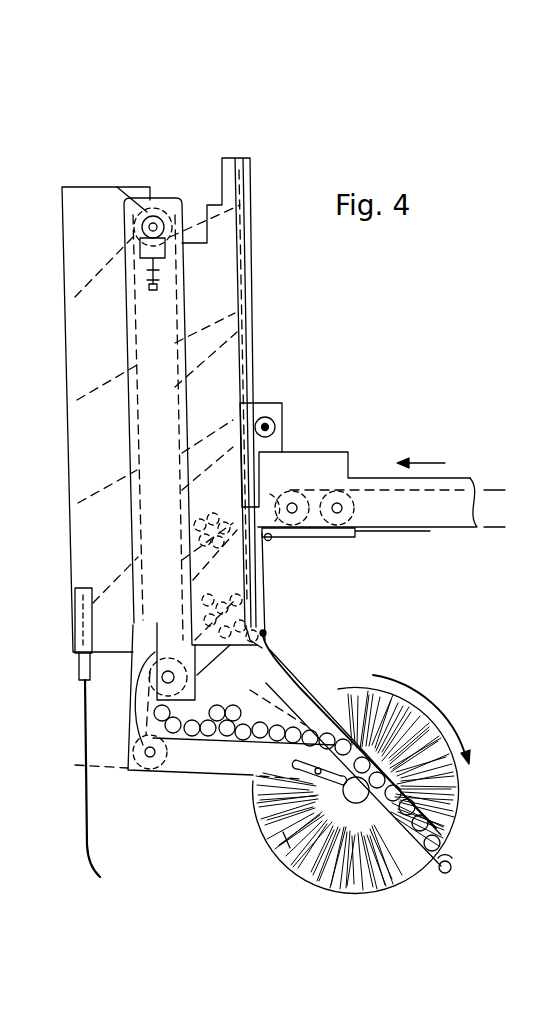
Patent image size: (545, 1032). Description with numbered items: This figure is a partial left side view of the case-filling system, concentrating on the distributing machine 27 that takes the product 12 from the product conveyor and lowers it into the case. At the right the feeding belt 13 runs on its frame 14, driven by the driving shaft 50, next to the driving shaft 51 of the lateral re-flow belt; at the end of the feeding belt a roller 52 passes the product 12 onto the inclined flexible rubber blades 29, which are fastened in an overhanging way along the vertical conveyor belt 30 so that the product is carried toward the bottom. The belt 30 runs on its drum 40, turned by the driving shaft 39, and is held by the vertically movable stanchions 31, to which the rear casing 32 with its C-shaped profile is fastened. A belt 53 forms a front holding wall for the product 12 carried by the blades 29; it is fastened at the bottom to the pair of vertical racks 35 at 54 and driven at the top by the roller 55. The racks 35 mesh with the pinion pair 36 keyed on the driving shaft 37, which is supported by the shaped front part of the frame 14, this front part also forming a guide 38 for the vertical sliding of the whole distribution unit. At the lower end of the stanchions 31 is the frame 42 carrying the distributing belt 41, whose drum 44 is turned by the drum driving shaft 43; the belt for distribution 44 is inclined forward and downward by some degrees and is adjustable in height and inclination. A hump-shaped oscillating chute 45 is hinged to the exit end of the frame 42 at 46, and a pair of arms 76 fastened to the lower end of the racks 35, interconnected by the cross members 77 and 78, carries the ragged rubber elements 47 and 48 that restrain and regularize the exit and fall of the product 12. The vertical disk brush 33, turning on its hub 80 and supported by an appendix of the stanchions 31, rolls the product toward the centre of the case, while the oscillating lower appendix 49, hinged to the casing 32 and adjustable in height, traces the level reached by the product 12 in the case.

The product 12 is at (190, 515).
The feeding belt 13 is at (477, 528).
The frame 14 is at (470, 484).
The distributing machine 27 is at (67, 455).
The inclined flexible rubber blades 29 is at (85, 275).
The vertical conveyor belt 30 is at (130, 318).
The vertically movable stanchions 31 is at (163, 200).
The rear casing 32 is at (72, 578).
The vertical disk brush 33 is at (455, 727).
The vertical racks 35 is at (250, 255).
The pinion pair 36 is at (265, 403).
The driving shaft 37 is at (276, 427).
The guide 38 is at (300, 446).
The driving shaft 39 is at (117, 187).
The drum 40 is at (140, 227).
The distributing belt 41 is at (167, 773).
The frame 42 is at (243, 765).
The drum driving shaft 43 is at (147, 750).
The belt for distribution of the product 44 is at (75, 766).
The chute 45 is at (290, 848).
The hinge of the chute 46 is at (300, 774).
The ragged rubber element 47 is at (237, 758).
The ragged rubber element 48 is at (375, 755).
The oscillating lower appendix 49 is at (85, 707).
The driving shaft of belt 13 50 is at (292, 500).
The driving shaft of belt 16 51 is at (339, 510).
The roller 52 is at (292, 535).
The belt 53 is at (268, 605).
The fastening point 54 is at (270, 634).
The roller 55 is at (270, 540).
The pair of arms 76 is at (285, 652).
The cross member 77 is at (262, 662).
The cross member 78 is at (290, 668).
The hub 80 is at (448, 808).